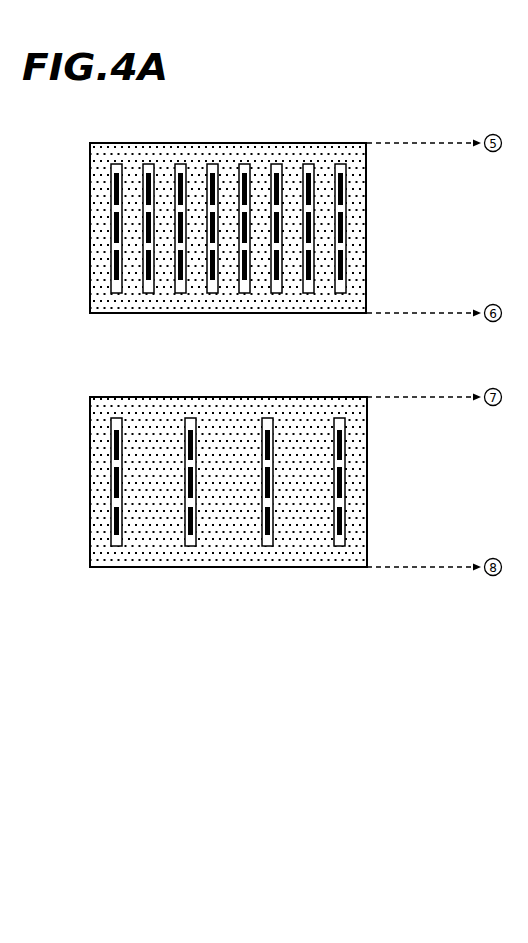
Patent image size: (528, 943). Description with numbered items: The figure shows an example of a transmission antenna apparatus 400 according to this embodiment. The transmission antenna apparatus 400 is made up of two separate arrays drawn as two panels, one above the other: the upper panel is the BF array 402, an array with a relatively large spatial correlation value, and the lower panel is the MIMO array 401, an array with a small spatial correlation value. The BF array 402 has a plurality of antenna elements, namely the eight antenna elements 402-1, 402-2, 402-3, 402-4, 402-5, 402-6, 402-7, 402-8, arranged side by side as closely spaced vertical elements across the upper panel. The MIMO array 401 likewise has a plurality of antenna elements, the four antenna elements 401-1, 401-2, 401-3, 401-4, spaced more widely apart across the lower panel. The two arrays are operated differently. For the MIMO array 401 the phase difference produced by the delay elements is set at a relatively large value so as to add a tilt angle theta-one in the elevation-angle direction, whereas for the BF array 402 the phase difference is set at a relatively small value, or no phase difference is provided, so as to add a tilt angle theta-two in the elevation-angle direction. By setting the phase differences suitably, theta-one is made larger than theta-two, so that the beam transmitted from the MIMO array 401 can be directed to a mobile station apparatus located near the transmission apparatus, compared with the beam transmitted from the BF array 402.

The transmission antenna apparatus 400 is at (62, 145).
The MIMO array 401 is at (334, 397).
The antenna element 401-1 is at (123, 467).
The antenna element 401-2 is at (197, 467).
The antenna element 401-3 is at (274, 467).
The antenna element 401-4 is at (345, 479).
The BF array 402 is at (333, 313).
The antenna element 402-1 is at (113, 223).
The antenna element 402-2 is at (147, 164).
The antenna element 402-3 is at (178, 164).
The antenna element 402-4 is at (212, 164).
The antenna element 402-5 is at (245, 164).
The antenna element 402-6 is at (306, 164).
The antenna element 402-7 is at (340, 164).
The antenna element 402-8 is at (347, 228).